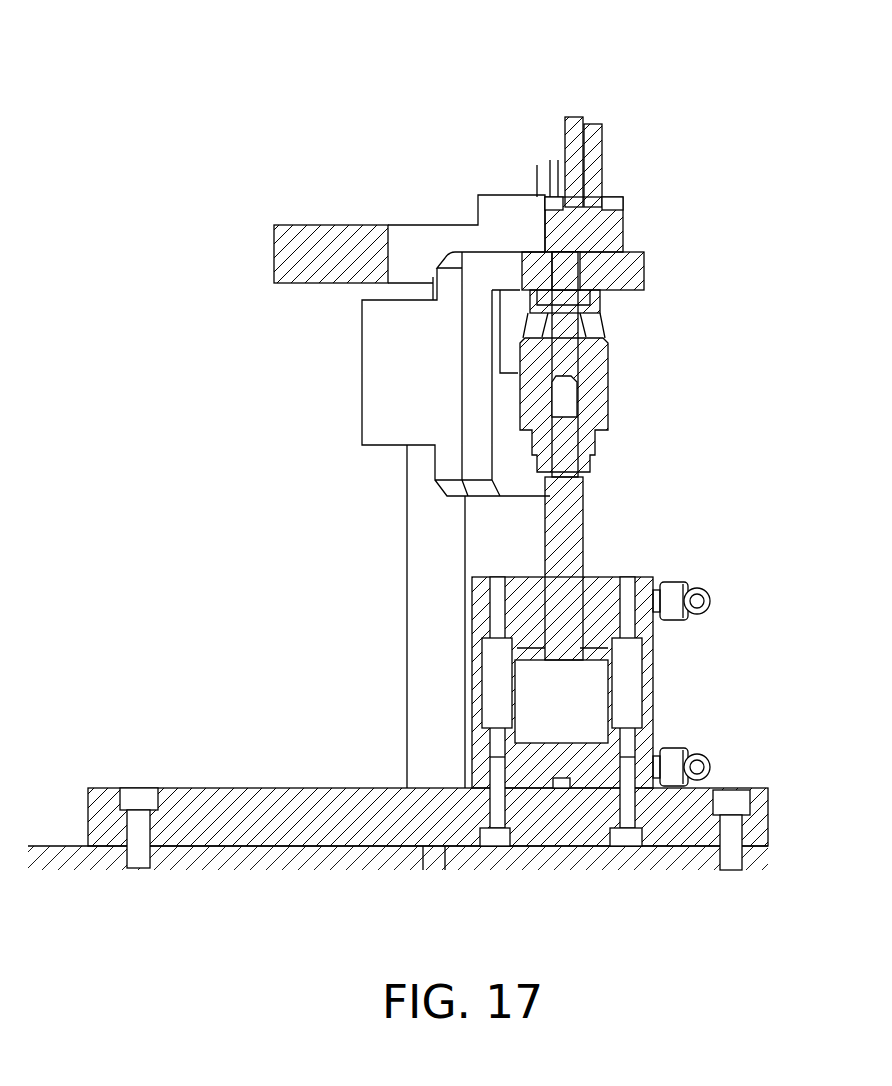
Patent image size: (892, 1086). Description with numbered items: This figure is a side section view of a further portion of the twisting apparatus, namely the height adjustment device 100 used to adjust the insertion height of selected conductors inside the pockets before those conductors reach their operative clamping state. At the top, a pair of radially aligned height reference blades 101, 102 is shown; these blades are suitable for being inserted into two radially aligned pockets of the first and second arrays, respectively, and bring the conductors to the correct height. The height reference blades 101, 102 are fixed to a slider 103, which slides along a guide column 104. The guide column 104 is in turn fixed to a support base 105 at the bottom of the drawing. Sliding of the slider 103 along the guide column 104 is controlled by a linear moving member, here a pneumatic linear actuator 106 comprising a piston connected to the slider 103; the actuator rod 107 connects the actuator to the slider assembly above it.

The height adjustment device 100 is at (290, 115).
The height reference blade 101 is at (573, 147).
The height reference blade 102 is at (593, 152).
The slider 103 is at (375, 389).
The guide column 104 is at (420, 588).
The support base 105 is at (247, 790).
The pneumatic linear actuator 106 is at (588, 690).
The plunger rod 107 is at (585, 498).